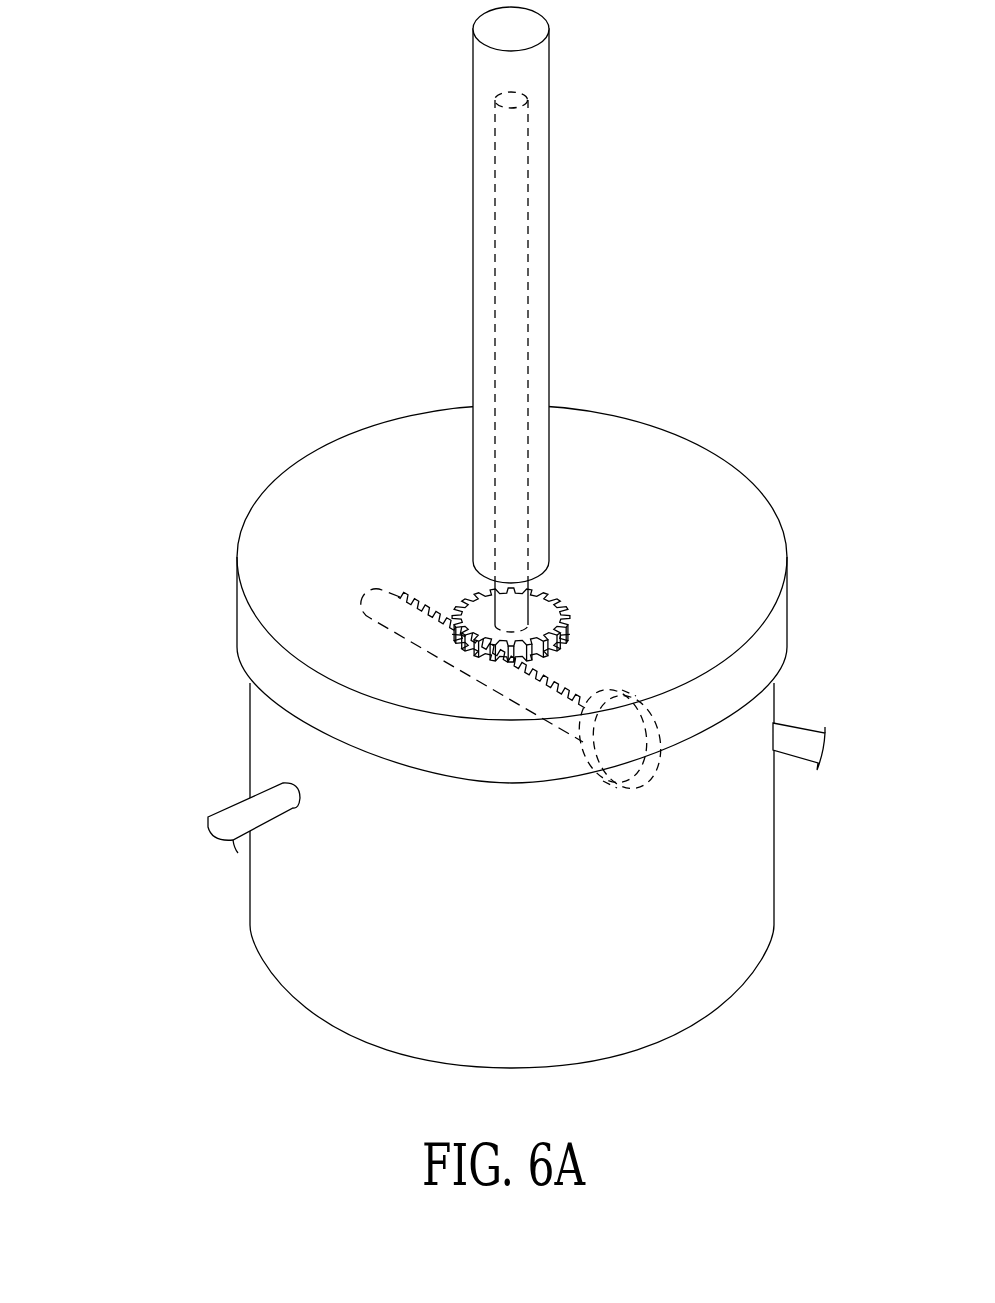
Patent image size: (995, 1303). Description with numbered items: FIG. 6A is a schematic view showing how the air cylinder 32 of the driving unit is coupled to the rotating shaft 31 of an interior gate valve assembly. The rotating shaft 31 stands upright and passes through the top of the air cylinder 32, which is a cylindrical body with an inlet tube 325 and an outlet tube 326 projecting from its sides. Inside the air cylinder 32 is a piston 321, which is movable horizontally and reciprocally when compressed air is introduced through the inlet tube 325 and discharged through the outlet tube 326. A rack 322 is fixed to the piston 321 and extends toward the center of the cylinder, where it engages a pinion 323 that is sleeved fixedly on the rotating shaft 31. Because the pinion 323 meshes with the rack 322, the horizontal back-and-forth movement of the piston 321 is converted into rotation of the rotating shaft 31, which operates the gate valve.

The rotating shaft 31 is at (585, 152).
The air cylinder 32 is at (186, 703).
The piston 321 is at (630, 733).
The rack 322 is at (530, 687).
The pinion 323 is at (567, 603).
The inlet tube 325 is at (247, 818).
The outlet tube 326 is at (797, 750).